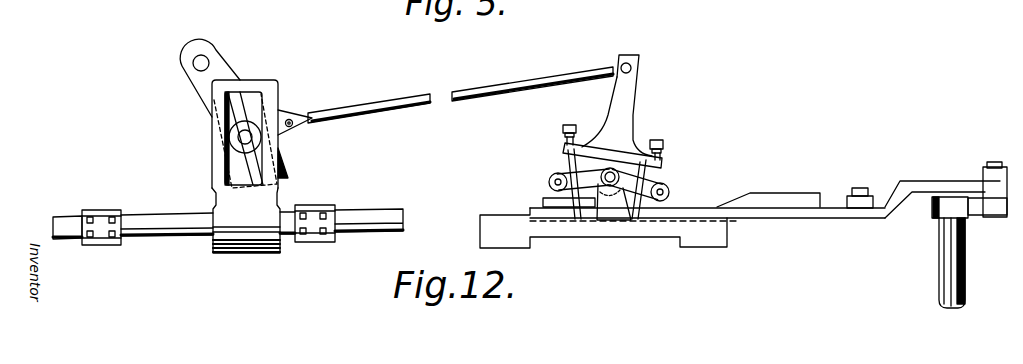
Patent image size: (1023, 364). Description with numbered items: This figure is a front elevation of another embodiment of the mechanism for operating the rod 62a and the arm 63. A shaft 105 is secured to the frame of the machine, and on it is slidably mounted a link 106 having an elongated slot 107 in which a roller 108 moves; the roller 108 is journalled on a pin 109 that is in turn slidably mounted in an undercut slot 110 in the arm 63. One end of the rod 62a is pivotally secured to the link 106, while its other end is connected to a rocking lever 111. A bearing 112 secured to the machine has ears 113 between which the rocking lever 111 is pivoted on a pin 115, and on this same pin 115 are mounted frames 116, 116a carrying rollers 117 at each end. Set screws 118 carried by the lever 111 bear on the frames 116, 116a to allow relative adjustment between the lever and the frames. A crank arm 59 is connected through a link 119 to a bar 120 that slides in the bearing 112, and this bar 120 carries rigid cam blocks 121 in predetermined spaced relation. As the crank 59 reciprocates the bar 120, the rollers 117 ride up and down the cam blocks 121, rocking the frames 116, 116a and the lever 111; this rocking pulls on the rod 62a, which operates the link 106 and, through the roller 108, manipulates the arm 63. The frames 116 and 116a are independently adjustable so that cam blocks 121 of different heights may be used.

The arm 59 is at (987, 206).
The rod 62a is at (378, 110).
The arm 63 is at (194, 78).
The shaft 105 is at (153, 221).
The link 106 is at (235, 252).
The elongated slot 107 is at (230, 172).
The roller 108 is at (256, 138).
The pin 109 is at (247, 146).
The undercut slot 110 is at (233, 110).
The rocking lever 111 is at (622, 107).
The bearing 112 is at (662, 228).
The ears 113 is at (612, 210).
The pin 115 is at (596, 187).
The frame 116 is at (586, 185).
The frame 116a is at (640, 192).
The rollers 117 is at (548, 177).
The set screws 118 is at (562, 124).
The link 119 is at (917, 180).
The bar 120 is at (830, 213).
The cam blocks 121 is at (549, 200).